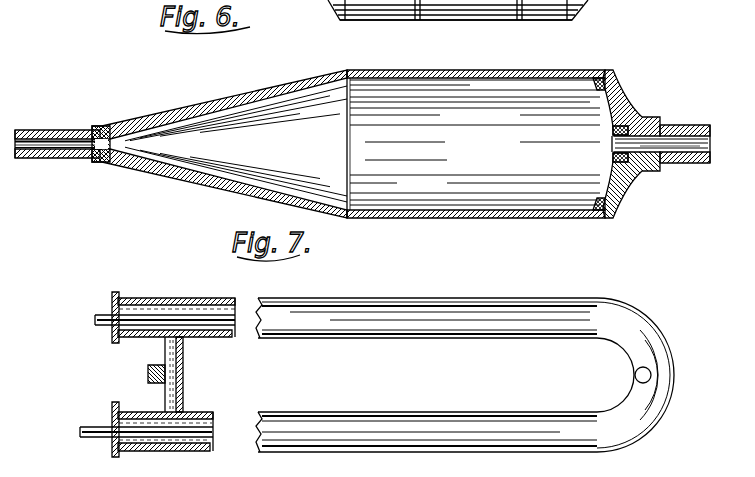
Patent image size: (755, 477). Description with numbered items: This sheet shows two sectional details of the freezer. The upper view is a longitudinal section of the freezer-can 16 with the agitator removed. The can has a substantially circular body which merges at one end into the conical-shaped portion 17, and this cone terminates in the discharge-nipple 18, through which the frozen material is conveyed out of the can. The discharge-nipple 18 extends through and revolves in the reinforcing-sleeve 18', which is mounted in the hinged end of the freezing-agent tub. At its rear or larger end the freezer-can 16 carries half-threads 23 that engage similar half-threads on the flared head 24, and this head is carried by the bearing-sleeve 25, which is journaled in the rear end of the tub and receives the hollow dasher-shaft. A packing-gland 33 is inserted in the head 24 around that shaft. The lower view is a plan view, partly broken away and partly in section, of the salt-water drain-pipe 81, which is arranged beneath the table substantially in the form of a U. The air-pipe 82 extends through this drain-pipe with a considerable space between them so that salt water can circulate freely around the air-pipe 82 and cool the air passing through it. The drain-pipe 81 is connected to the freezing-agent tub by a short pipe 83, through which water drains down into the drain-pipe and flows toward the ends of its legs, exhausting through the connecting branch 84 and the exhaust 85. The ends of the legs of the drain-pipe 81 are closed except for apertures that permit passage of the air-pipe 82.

In FIG. 6, the freezer-can 16 is at (459, 71).
In FIG. 6, the conical-shaped portion 17 is at (292, 150).
In FIG. 6, the discharge-nipple 18 is at (61, 157).
In FIG. 6, the reinforcing-sleeve 18' is at (78, 134).
In FIG. 6, the half-threads 23 is at (598, 220).
In FIG. 6, the flared head 24 is at (613, 98).
In FIG. 6, the bearing-sleeve 25 is at (665, 124).
In FIG. 6, the packing-gland 33 is at (614, 155).
In FIG. 7, the salt-water drain-pipe 81 is at (473, 338).
In FIG. 7, the air-pipe 82 is at (95, 437).
In FIG. 7, the short pipe 83 is at (651, 375).
In FIG. 7, the connecting branch 84 is at (183, 366).
In FIG. 7, the exhaust 85 is at (149, 371).